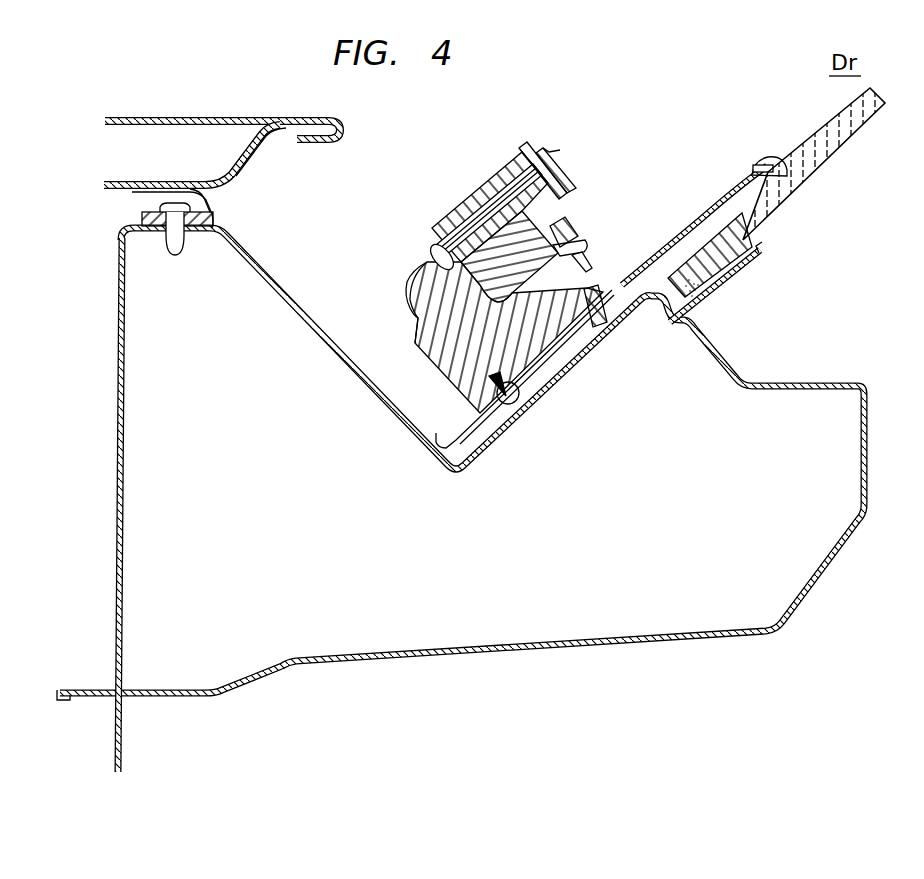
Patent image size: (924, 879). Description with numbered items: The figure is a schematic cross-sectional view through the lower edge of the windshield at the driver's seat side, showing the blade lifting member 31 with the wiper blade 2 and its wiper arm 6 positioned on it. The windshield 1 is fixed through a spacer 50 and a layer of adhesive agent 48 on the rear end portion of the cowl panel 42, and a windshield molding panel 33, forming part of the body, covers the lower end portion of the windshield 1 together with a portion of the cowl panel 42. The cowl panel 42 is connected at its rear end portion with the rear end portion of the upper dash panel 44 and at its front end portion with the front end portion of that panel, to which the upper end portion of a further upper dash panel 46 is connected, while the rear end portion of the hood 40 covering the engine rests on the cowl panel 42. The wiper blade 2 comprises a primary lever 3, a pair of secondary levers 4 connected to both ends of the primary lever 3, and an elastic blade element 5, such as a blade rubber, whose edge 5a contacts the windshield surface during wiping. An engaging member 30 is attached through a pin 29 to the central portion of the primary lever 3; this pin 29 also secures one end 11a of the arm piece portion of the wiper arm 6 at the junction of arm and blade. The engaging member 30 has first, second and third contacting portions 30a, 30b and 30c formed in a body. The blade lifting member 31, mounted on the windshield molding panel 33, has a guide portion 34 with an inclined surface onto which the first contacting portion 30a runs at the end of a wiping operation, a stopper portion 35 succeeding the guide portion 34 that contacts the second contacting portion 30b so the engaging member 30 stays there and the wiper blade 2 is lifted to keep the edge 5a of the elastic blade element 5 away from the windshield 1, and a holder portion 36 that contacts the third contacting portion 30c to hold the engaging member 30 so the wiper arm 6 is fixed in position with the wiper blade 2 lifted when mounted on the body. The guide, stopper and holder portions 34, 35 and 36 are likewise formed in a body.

The windshield 1 is at (813, 140).
The wiper blade 2 is at (547, 145).
The primary lever 3 is at (565, 185).
The secondary lever 4 is at (570, 222).
The elastic blade element 5 is at (580, 240).
The edge of the elastic blade element 5a is at (590, 257).
The wiper arm 6 is at (522, 149).
The one end of the arm piece portion 11a is at (500, 167).
The pin 29 is at (540, 167).
The engaging member 30 is at (445, 207).
The first contacting portion 30a is at (515, 290).
The second contacting portion 30b is at (433, 237).
The third contacting portion 30c is at (503, 280).
The blade lifting member 31 is at (452, 393).
The windshield molding panel 33 is at (680, 227).
The guide portion 34 is at (577, 292).
The stopper portion 35 is at (480, 302).
The holder portion 36 is at (410, 302).
The hood 40 is at (210, 115).
The cowl panel 42 is at (127, 453).
The upper dash panel 44 is at (578, 648).
The upper dash panel 46 is at (122, 730).
The layer of adhesive agent 48 is at (672, 318).
The spacer 50 is at (747, 243).